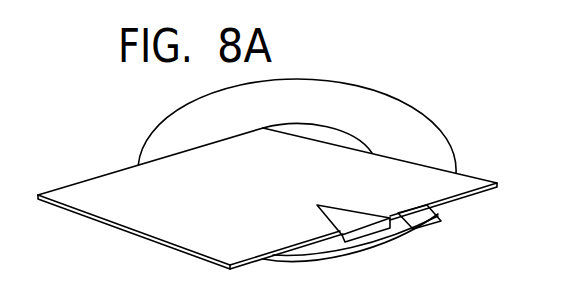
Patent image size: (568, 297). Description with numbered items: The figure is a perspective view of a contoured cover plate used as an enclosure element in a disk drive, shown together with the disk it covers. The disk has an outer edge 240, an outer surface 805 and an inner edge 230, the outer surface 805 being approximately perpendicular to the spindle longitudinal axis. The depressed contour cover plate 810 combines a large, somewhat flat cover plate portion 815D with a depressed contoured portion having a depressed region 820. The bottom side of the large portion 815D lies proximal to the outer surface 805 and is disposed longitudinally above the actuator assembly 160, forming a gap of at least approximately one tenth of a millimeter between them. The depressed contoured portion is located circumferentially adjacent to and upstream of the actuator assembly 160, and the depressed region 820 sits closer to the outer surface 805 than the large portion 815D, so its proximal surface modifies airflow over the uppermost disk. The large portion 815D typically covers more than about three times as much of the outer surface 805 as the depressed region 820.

The depressed contour cover plate 810 is at (163, 223).
The large cover plate portion 815D is at (117, 188).
The inner edge 230 is at (334, 128).
The outer surface 805 is at (386, 115).
The outer edge 240 is at (441, 132).
The depressed region 820 is at (357, 228).
The actuator assembly 160 is at (441, 222).